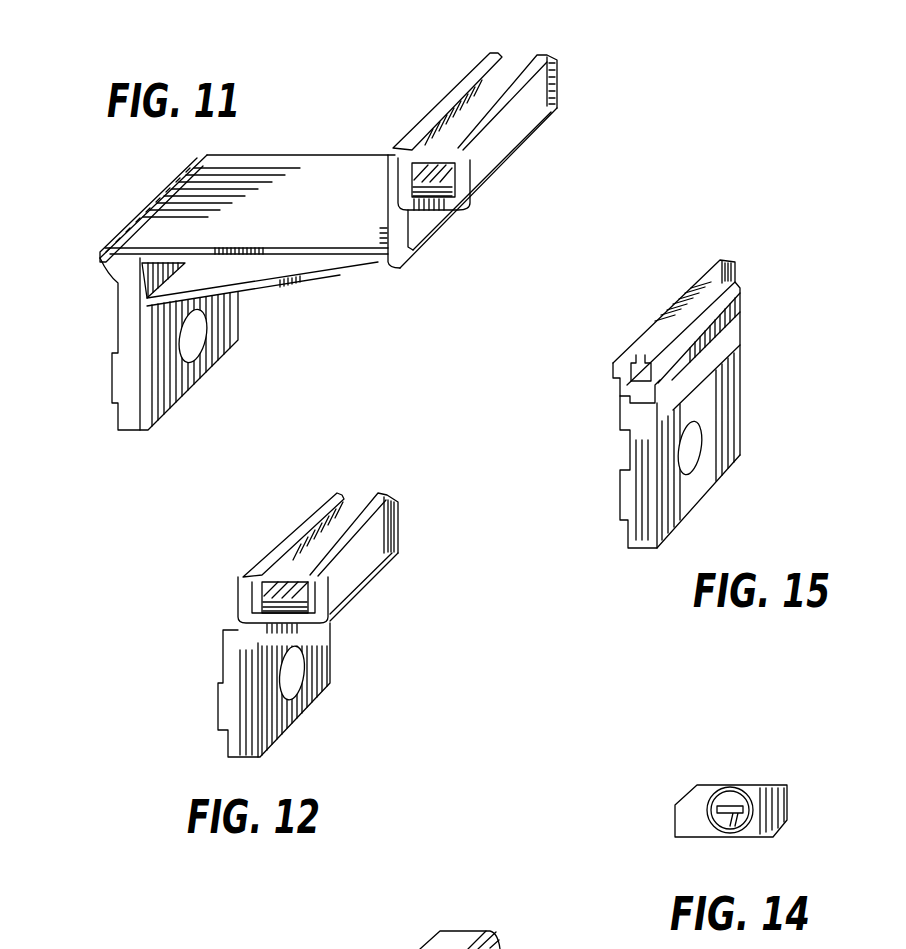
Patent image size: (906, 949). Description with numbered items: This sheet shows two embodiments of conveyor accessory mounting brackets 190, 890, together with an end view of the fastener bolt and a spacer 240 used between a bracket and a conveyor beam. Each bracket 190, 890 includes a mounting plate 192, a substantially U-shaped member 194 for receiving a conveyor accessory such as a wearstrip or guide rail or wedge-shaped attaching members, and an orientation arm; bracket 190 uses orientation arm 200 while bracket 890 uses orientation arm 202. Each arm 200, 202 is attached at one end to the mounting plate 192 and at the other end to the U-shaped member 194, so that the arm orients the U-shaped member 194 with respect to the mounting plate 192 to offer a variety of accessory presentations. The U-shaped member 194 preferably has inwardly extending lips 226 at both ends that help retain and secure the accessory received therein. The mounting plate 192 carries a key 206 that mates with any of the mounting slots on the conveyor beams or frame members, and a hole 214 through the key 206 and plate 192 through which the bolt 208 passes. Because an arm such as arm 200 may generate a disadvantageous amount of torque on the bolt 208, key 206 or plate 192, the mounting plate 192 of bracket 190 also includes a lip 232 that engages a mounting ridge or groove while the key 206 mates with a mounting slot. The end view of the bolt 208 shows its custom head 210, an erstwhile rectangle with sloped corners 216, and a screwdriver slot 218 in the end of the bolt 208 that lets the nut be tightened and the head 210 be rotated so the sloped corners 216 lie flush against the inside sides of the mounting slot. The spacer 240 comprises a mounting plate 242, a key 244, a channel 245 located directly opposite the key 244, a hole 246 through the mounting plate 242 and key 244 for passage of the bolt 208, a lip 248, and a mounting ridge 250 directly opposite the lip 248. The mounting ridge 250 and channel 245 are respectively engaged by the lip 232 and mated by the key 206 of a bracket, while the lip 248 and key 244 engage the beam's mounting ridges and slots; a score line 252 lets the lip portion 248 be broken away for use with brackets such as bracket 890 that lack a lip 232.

In FIG. 11, the conveyor accessory mounting bracket 190 is at (352, 142).
In FIG. 11, the mounting plate 192 is at (118, 325).
In FIG. 12, the mounting plate 192 is at (223, 660).
In FIG. 11, the substantially U-shaped member 194 is at (520, 127).
In FIG. 12, the substantially U-shaped member 194 is at (375, 557).
In FIG. 11, the orientation arm 200 is at (312, 222).
In FIG. 12, the orientation arm 202 is at (237, 628).
In FIG. 11, the key 206 is at (112, 375).
In FIG. 12, the key 206 is at (218, 713).
In FIG. 14, the bolt 208 is at (770, 782).
In FIG. 14, the custom head 210 is at (707, 797).
In FIG. 11, the hole 214 is at (203, 338).
In FIG. 12, the hole 214 is at (296, 680).
In FIG. 14, the sloped corners 216 is at (687, 797).
In FIG. 14, the screwdriver slot 218 is at (733, 830).
In FIG. 11, the inwardly extending lips 226 is at (553, 56).
In FIG. 12, the inwardly extending lips 226 is at (383, 495).
In FIG. 11, the lip portion 232 is at (103, 266).
In FIG. 15, the spacer 240 is at (747, 368).
In FIG. 15, the mounting plate 242 is at (642, 550).
In FIG. 15, the key portion 244 is at (620, 498).
In FIG. 15, the channel 245 is at (727, 405).
In FIG. 15, the hole 246 is at (697, 452).
In FIG. 15, the lip portion 248 is at (615, 383).
In FIG. 15, the mounting ridge 250 is at (650, 360).
In FIG. 15, the score line 252 is at (630, 455).
In FIG. 12, the conveyor accessory mounting bracket 890 is at (337, 627).